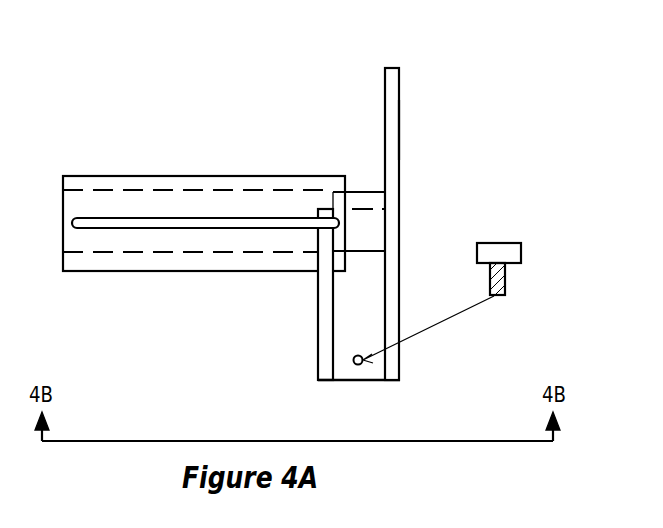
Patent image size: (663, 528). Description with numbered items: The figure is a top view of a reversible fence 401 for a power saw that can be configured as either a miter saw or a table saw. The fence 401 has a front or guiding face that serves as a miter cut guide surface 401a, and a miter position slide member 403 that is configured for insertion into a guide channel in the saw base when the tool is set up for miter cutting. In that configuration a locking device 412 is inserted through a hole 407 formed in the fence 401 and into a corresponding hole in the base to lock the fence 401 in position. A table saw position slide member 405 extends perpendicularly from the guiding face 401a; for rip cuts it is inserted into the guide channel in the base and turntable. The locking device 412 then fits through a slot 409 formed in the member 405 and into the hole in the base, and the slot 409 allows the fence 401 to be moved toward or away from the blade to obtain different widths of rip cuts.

The reversible fence 401 is at (400, 72).
The miter cut guide surface 401a is at (400, 146).
The miter position slide member 403 is at (317, 332).
The table saw position slide member 405 is at (82, 176).
The hole 407 is at (353, 362).
The slot 409 is at (213, 218).
The locking device 412 is at (493, 243).